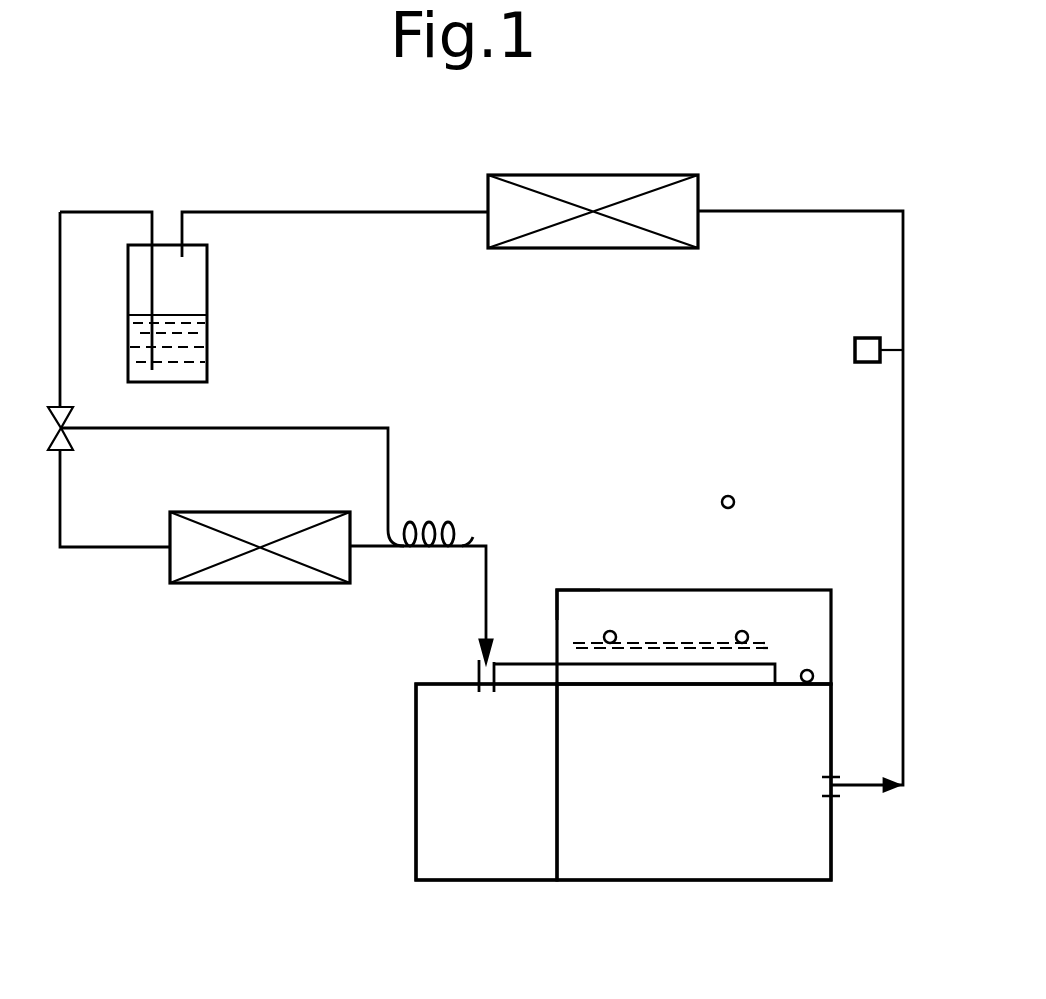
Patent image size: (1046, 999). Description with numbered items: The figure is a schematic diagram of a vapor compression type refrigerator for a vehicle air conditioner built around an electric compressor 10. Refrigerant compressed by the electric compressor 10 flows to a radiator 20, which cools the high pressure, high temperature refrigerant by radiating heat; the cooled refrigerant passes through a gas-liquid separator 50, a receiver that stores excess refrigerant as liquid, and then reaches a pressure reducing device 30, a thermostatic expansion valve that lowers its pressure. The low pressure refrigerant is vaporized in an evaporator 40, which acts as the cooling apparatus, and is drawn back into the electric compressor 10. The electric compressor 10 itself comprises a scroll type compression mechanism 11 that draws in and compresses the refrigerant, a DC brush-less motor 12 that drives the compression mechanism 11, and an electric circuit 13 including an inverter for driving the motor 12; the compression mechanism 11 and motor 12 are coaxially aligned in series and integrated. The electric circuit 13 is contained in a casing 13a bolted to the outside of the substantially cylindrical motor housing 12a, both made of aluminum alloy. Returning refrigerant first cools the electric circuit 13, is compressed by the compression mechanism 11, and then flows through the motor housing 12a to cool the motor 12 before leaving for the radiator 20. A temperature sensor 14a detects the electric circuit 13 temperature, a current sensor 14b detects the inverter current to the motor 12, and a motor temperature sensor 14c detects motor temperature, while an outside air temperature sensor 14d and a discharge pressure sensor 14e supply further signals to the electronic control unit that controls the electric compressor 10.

The electric compressor 10 is at (842, 845).
The compression mechanism 11 is at (482, 852).
The motor 12 is at (690, 852).
The motor housing 12a is at (808, 741).
The electric circuit 13 is at (680, 628).
The casing 13a is at (573, 590).
The temperature sensor 14a is at (742, 631).
The current sensor 14b is at (610, 631).
The motor temperature sensor 14c is at (807, 670).
The outside air temperature sensor 14d is at (730, 496).
The discharge pressure sensor 14e is at (855, 352).
The radiator 20 is at (597, 175).
The pressure reducing device 30 is at (74, 440).
The evaporator 40 is at (218, 512).
The gas-liquid separator 50 is at (207, 281).